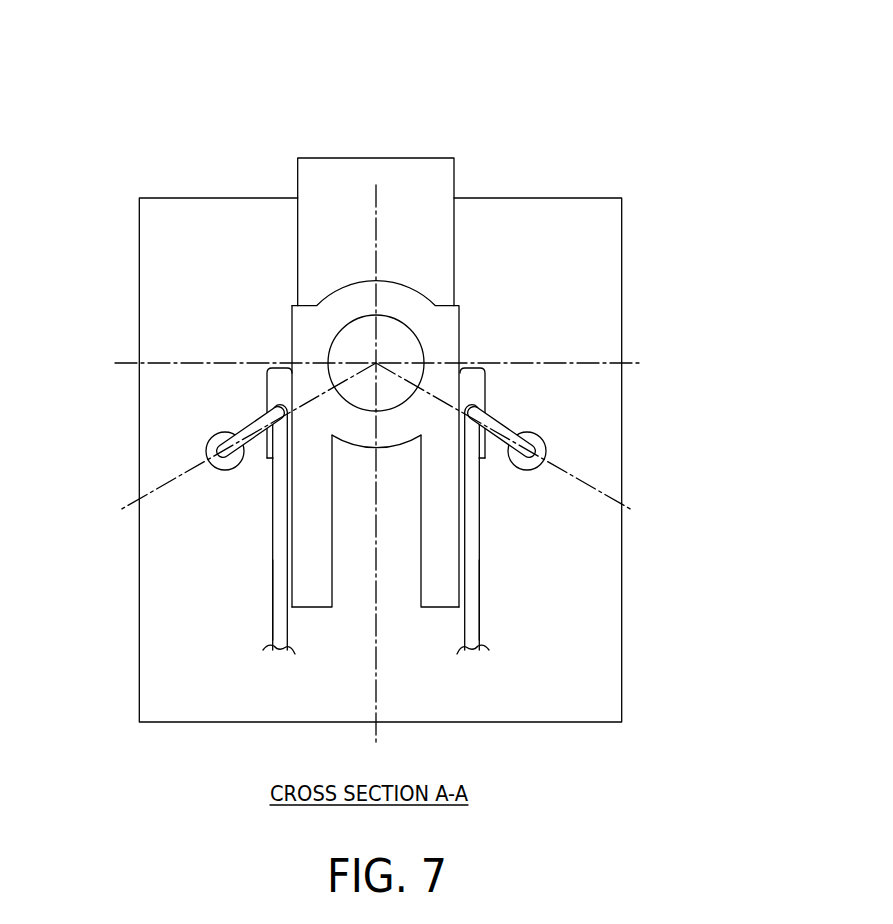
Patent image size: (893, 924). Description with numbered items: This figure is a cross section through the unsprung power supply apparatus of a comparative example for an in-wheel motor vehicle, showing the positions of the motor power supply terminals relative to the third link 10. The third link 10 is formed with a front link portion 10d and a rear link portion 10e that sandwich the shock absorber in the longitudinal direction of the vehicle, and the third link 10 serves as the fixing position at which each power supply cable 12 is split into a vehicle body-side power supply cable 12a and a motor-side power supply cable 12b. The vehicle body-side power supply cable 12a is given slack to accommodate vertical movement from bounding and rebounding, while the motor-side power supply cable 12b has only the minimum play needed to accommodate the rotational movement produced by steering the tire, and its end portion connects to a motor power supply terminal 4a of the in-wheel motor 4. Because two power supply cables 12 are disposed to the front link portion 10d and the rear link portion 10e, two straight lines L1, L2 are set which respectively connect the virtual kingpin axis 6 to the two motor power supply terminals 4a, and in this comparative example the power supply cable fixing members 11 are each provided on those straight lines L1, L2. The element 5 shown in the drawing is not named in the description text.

The in-wheel motor 4 is at (623, 255).
The motor power supply terminal 4a is at (224, 472).
The shaft 5 is at (405, 156).
The virtual kingpin axis 6 is at (378, 361).
The third link 10 is at (496, 483).
The front link portion 10d is at (429, 544).
The rear link portion 10e is at (323, 544).
The power supply cable fixing member 11 is at (266, 383).
The power supply cable 12 is at (271, 623).
The vehicle body-side power supply cable 12a is at (272, 583).
The motor-side power supply cable 12b is at (260, 421).
The straight line L1 is at (589, 484).
The straight line L2 is at (163, 484).